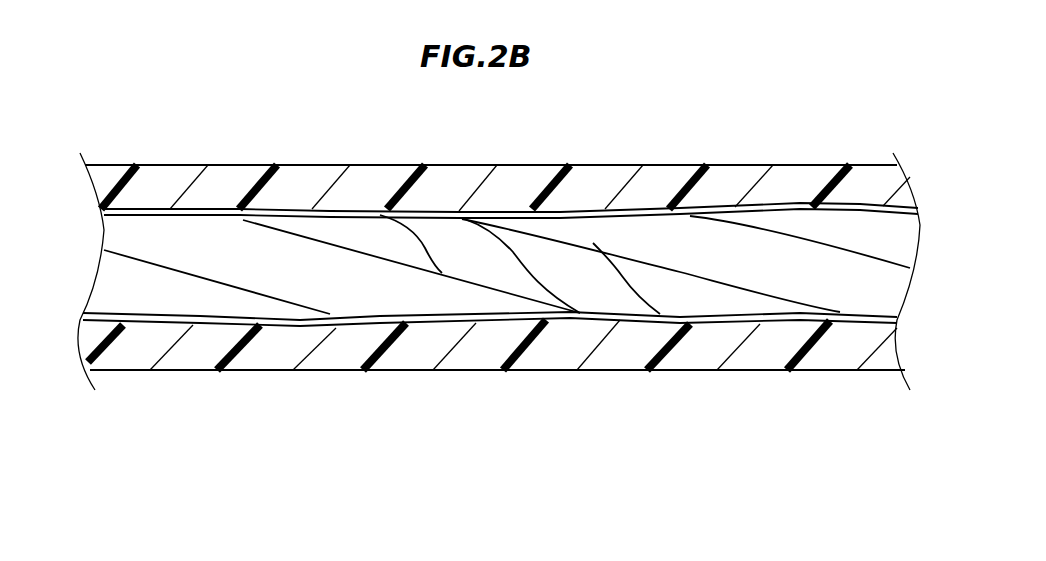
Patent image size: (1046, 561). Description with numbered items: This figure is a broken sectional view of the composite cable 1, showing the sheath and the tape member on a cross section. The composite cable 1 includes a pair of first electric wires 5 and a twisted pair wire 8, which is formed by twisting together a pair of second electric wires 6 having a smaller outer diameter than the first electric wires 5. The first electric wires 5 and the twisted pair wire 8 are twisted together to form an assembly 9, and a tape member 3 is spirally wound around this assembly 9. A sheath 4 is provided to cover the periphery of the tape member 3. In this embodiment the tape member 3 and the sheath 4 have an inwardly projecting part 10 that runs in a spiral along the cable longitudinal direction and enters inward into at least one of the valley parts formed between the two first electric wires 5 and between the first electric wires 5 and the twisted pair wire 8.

The composite cable 1 is at (192, 130).
The tape member 3 is at (398, 206).
The sheath 4 is at (806, 372).
The first electric wires 5 is at (703, 227).
The second electric wires 6 is at (483, 243).
The twisted pair wire 8 is at (574, 239).
The assembly 9 is at (350, 309).
The inwardly projecting part 10 is at (594, 333).